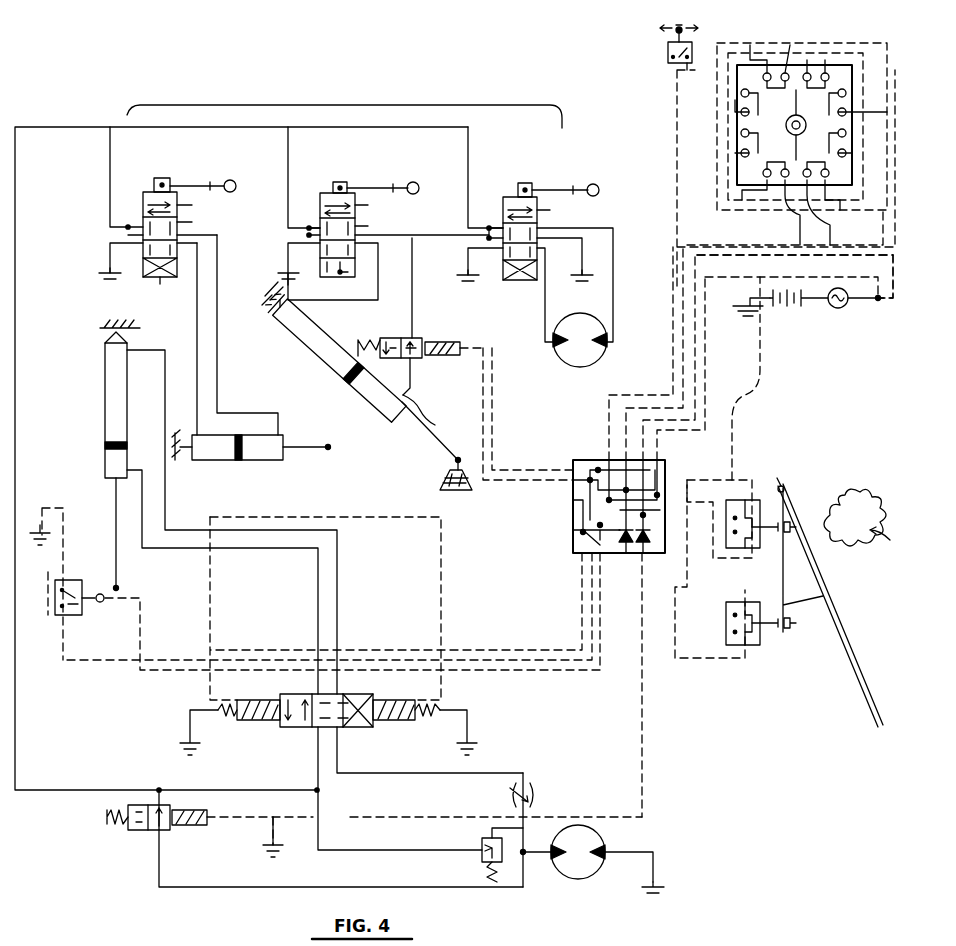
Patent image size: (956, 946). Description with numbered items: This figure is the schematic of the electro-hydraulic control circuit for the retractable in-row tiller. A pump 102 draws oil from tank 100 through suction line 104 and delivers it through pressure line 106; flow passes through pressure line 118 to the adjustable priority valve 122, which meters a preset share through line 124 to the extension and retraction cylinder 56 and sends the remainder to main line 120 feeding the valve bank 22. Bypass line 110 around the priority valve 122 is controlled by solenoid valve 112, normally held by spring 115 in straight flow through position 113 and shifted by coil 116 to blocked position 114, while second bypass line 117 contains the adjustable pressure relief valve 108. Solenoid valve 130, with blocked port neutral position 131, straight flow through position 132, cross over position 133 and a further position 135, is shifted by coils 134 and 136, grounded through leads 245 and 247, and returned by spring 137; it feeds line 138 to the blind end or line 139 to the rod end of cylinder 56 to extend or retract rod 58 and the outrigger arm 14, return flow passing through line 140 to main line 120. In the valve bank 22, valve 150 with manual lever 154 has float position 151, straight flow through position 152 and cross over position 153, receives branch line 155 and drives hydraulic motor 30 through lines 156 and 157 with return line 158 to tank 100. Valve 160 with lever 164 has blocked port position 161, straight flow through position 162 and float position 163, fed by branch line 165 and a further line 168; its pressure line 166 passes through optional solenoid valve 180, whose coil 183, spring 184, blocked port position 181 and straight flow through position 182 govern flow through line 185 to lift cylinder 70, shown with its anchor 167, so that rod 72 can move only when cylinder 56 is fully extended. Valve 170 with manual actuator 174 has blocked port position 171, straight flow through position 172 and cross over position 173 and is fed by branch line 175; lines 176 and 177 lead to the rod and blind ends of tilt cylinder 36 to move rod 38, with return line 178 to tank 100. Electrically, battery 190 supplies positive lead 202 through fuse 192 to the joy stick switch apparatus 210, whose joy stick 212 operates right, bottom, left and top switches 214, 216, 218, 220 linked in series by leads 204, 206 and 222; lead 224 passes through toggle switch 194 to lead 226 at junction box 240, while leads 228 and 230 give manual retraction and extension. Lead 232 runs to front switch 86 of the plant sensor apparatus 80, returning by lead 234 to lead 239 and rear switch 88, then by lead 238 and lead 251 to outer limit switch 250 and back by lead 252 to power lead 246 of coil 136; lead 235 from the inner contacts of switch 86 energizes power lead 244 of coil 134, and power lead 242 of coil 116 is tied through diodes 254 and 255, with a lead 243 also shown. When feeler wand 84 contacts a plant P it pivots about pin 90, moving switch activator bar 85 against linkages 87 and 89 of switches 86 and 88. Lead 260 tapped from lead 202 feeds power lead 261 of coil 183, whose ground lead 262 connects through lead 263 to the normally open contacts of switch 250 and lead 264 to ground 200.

The valve bank 22 is at (344, 105).
The main pressure line 120 is at (17, 355).
The branch line 175 is at (110, 176).
The branch line 165 is at (288, 175).
The branch line 155 is at (470, 140).
The pressure line 166 is at (468, 228).
The return line 178 is at (110, 243).
The three position, four-way valve 170 is at (198, 216).
The straight flow through position 172 is at (192, 205).
The blocked port neutral position 171 is at (192, 222).
The manual actuator 174 is at (205, 180).
The cross over position 173 is at (160, 284).
The three position, four-way valve 160 is at (363, 217).
The straight flow through position 162 is at (368, 205).
The blocked port neutral position 161 is at (368, 226).
The manual actuator lever 164 is at (386, 182).
The float mode position 163 is at (325, 284).
The hydraulic line 168 is at (288, 243).
The three position, four-way valve 150 is at (535, 234).
The manual lever actuator 154 is at (585, 185).
The straight flow through position 152 is at (550, 210).
The float mode neutral position 151 is at (575, 228).
The cross over position 153 is at (512, 282).
The return line 158 is at (468, 258).
The reservoir or tank 100 is at (104, 281).
The lift cylinder 70 is at (367, 387).
The cylinder anchor 167 is at (353, 305).
The rod 72 is at (425, 445).
The outrigger arm 14 is at (440, 484).
The solenoid valve 180 is at (401, 336).
The straight flow through position 182 is at (368, 338).
The blocked port position 181 is at (420, 335).
The spring 184 is at (395, 360).
The coil 183 is at (440, 358).
The line 185 is at (435, 425).
The power lead 261 is at (492, 350).
The ground lead 262 is at (483, 400).
The hydraulic motor 30 is at (573, 352).
The line 157 is at (545, 325).
The line 156 is at (615, 340).
The extension and retraction cylinder 56 is at (126, 454).
The line 177 is at (198, 332).
The rod 58 is at (112, 545).
The line 138 is at (165, 505).
The line 139 is at (188, 560).
The line 176 is at (217, 348).
The tilt cylinder 36 is at (251, 462).
The rod 38 is at (315, 460).
The outer limit switch 250 is at (90, 612).
The lead 264 is at (68, 525).
The electrical ground 200 is at (38, 525).
The solenoid valve 130 is at (373, 728).
The coil 134 is at (258, 698).
The coil 136 is at (400, 698).
The blocked port neutral position 131 is at (345, 692).
The valve section 135 is at (240, 722).
The cross over position 133 is at (348, 730).
The spring 137 is at (430, 722).
The straight flow through position 132 is at (300, 730).
The ground lead 245 is at (220, 735).
The ground lead 247 is at (478, 722).
The return line 140 is at (337, 775).
The line 124 is at (478, 775).
The second bypass line 117 is at (410, 851).
The bypass line 110 is at (395, 887).
The solenoid valve 112 is at (142, 844).
The blocked mode position 114 is at (128, 830).
The coil 116 is at (198, 808).
The spring 115 is at (128, 812).
The straight flow through position 113 is at (162, 830).
The electrical line 243 is at (268, 828).
The pump 102 is at (623, 866).
The suction line 104 is at (655, 870).
The pressure line 106 is at (537, 855).
The priority valve 122 is at (532, 796).
The pressure relief valve 108 is at (494, 851).
The pressure line 118 is at (523, 845).
The lead 252 is at (515, 648).
The lead 263 is at (140, 662).
The lead 251 is at (552, 672).
The power lead 244 is at (441, 538).
The power lead 246 is at (441, 585).
The power lead 242 is at (642, 732).
The junction box 240 is at (584, 546).
The diode 254 is at (618, 545).
The diode 255 is at (648, 545).
The lead 226 is at (605, 398).
The lead 228 is at (622, 412).
The lead 230 is at (640, 425).
The lead 232 is at (725, 558).
The lead 235 is at (687, 478).
The lead 234 is at (732, 470).
The lead 238 is at (678, 660).
The lead 239 is at (722, 602).
The plant sensor apparatus 80 is at (808, 576).
The front switch 86 is at (758, 500).
The rear switch 88 is at (752, 645).
The linkage 87 is at (790, 520).
The linkage 89 is at (760, 640).
The switch activator bar 85 is at (783, 578).
The feeler wand 84 is at (832, 586).
The pin 90 is at (782, 480).
The plant P is at (880, 545).
The joy stick switch apparatus 210 is at (776, 155).
The joy stick 212 is at (786, 118).
The right switch 214 is at (870, 112).
The top switch 220 is at (790, 60).
The lead 206 is at (728, 93).
The left switch 218 is at (728, 133).
The lead 224 is at (735, 218).
The lead 222 is at (765, 210).
The lead 204 is at (838, 200).
The bottom switch 216 is at (820, 222).
The toggle switch 194 is at (668, 55).
The electric lead 260 is at (780, 272).
The positive lead 202 is at (893, 262).
The battery 190 is at (795, 310).
The fuse 192 is at (845, 308).